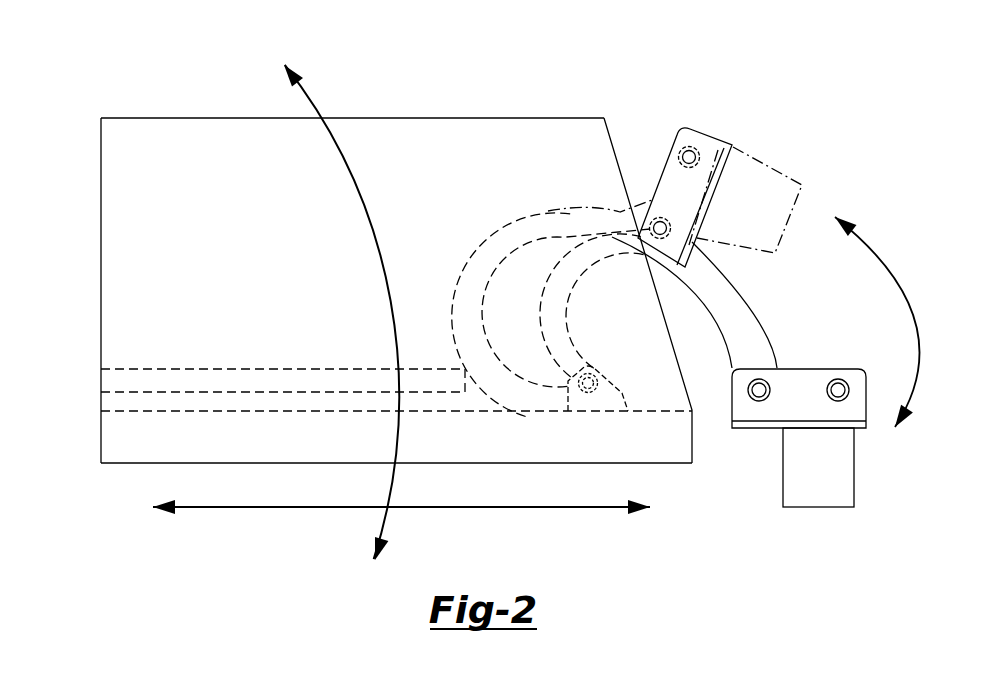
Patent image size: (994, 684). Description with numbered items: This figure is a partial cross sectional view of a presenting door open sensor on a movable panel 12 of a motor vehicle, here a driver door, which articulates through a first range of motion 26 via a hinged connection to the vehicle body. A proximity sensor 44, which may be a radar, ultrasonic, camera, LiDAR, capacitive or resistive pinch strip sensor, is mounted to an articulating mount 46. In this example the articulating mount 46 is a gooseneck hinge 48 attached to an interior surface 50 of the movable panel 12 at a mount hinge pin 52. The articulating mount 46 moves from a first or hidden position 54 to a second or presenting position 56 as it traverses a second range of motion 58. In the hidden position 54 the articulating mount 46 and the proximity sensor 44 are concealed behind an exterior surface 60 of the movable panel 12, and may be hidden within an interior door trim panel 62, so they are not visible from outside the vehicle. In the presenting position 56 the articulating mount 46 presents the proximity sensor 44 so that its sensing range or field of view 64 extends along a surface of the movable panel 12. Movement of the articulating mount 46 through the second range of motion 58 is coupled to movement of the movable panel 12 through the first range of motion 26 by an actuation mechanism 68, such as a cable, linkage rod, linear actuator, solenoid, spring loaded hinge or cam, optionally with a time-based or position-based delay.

The movable panel 12 is at (160, 82).
The first range of motion 26 is at (310, 97).
The proximity sensor 44 is at (793, 180).
The articulating mount 46 is at (553, 217).
The gooseneck hinge 48 is at (497, 262).
The interior surface 50 is at (138, 410).
The mount hinge pin 52 is at (603, 377).
The hidden position 54 is at (733, 125).
The presenting position 56 is at (864, 368).
The second range of motion 58 is at (879, 314).
The exterior surface 60 is at (138, 463).
The interior door trim panel 62 is at (540, 118).
The field of view 64 is at (583, 507).
The actuation mechanism 68 is at (270, 369).